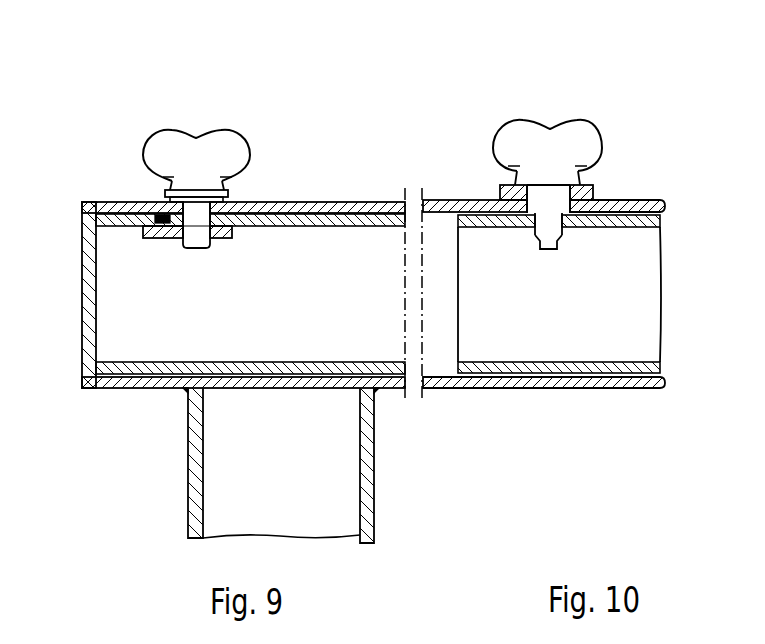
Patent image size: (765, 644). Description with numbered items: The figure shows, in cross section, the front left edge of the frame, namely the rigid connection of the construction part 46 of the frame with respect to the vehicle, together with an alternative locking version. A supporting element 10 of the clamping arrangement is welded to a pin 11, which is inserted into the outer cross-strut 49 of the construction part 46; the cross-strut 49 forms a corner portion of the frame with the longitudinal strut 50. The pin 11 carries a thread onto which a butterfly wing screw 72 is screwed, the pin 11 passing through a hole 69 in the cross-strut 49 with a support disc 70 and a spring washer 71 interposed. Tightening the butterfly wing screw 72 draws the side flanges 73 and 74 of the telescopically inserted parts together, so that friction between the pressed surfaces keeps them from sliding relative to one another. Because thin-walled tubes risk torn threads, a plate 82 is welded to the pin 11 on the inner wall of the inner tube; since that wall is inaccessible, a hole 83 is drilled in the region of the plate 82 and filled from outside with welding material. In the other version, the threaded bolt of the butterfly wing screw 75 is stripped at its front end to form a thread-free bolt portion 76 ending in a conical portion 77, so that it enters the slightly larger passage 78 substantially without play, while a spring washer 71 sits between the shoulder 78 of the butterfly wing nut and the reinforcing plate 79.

In FIG. 9, the supporting element 10 is at (82, 282).
In FIG. 9, the pin 11 is at (122, 388).
In FIG. 9, the construction part 46 is at (50, 138).
In FIG. 9, the outer cross-strut 49 is at (157, 376).
In FIG. 9, the longitudinal strut 50 is at (368, 470).
In FIG. 9, the hole 69 is at (247, 202).
In FIG. 9, the support disc 70 is at (150, 202).
In FIG. 9, the spring washer 71 is at (215, 186).
In FIG. 10, the spring washer 71 is at (580, 182).
In FIG. 9, the butterfly wing screw 72 is at (187, 150).
In FIG. 9, the side flange 73 is at (297, 203).
In FIG. 9, the side flange 74 is at (297, 220).
In FIG. 10, the butterfly wing screw 75 is at (557, 147).
In FIG. 10, the thread-free bolt portion 76 is at (545, 225).
In FIG. 10, the conical portion 77 is at (553, 246).
In FIG. 10, the passage 78 is at (515, 185).
In FIG. 10, the plate 79 is at (500, 197).
In FIG. 9, the plate 82 is at (170, 238).
In FIG. 9, the hole 83 is at (150, 223).